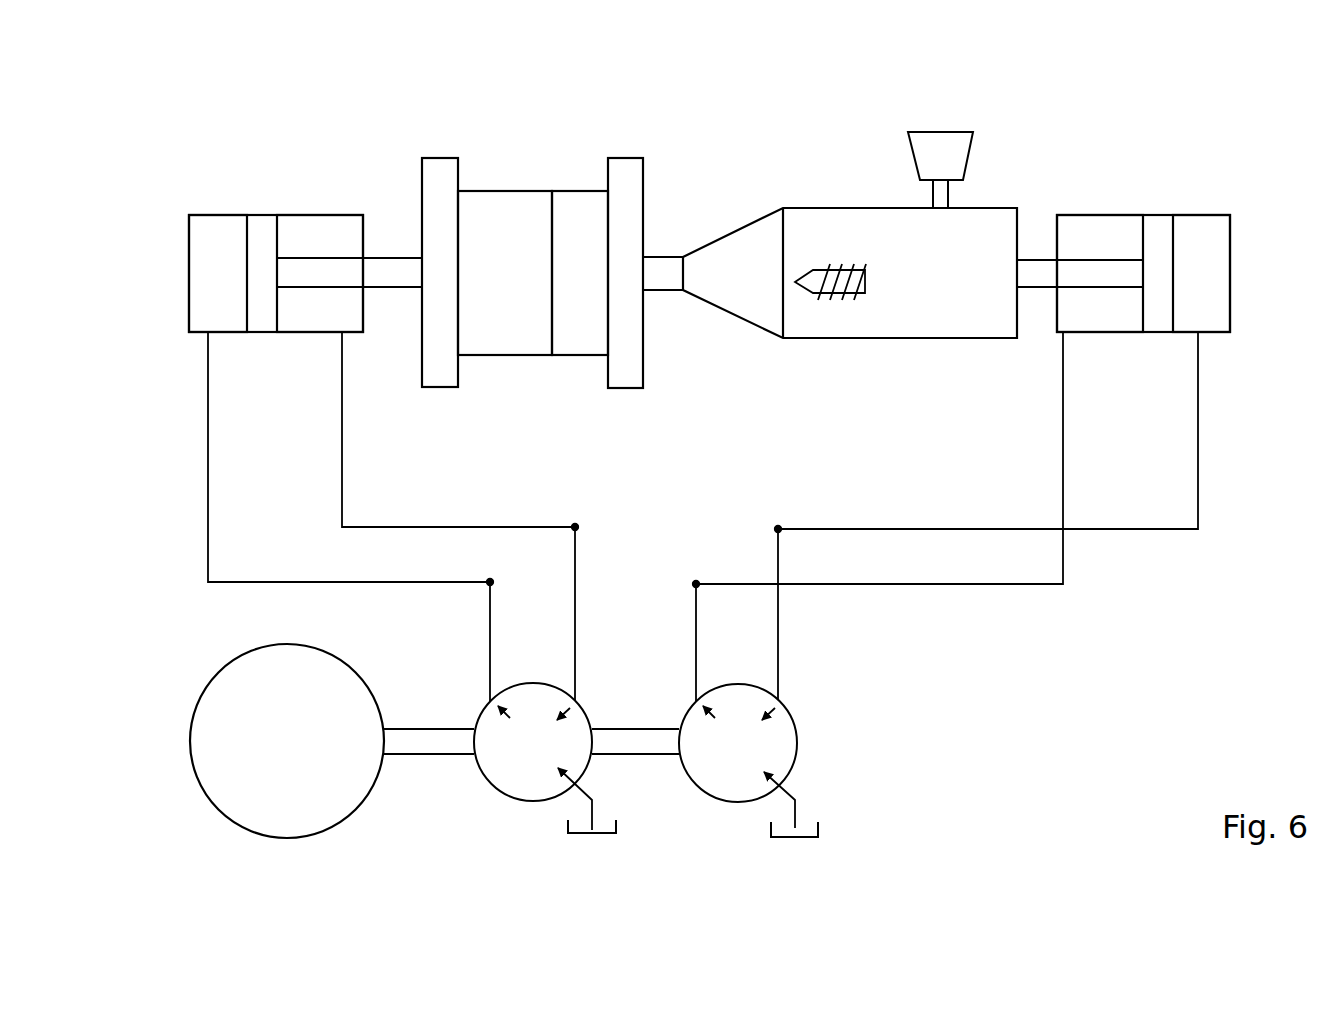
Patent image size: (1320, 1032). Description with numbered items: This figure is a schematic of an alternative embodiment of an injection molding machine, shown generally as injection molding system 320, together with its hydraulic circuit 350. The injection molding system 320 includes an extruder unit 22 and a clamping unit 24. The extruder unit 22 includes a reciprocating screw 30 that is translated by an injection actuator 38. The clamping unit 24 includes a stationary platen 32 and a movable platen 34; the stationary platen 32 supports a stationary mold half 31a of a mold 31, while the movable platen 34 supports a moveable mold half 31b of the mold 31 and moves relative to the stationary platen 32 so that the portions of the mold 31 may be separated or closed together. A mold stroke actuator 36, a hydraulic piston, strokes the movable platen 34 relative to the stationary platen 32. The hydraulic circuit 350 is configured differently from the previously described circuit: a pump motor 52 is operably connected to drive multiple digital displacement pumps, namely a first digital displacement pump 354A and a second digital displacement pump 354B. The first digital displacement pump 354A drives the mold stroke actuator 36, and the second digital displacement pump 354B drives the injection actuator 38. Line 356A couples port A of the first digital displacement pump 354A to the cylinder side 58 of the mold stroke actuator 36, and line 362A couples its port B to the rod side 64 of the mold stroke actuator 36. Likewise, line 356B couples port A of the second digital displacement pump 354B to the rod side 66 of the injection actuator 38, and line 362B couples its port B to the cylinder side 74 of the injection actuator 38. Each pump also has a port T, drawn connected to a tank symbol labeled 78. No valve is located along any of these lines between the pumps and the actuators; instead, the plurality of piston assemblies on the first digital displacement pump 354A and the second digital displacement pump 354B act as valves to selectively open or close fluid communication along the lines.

The injection molding system 320 is at (205, 104).
The clamping unit 24 is at (385, 160).
The mold 31 is at (560, 123).
The stationary mold half 31a is at (579, 188).
The moveable mold half 31b is at (492, 185).
The extruder unit 22 is at (800, 184).
The reciprocating screw 30 is at (848, 293).
The stationary platen 32 is at (645, 371).
The movable platen 34 is at (456, 382).
The mold stroke actuator 36 is at (258, 213).
The injection actuator 38 is at (1158, 213).
The cylinder side 58 is at (241, 294).
The rod side 64 is at (332, 316).
The rod side 66 is at (1099, 319).
The cylinder side 74 is at (1214, 316).
The pump motor 52 is at (220, 680).
The hydraulic circuit 350 is at (1128, 600).
The first digital displacement pump 354A is at (500, 795).
The second digital displacement pump 354B is at (797, 728).
The line 356A is at (204, 565).
The line 356B is at (708, 584).
The line 362A is at (462, 527).
The line 362B is at (878, 529).
The tank 78 is at (588, 838).